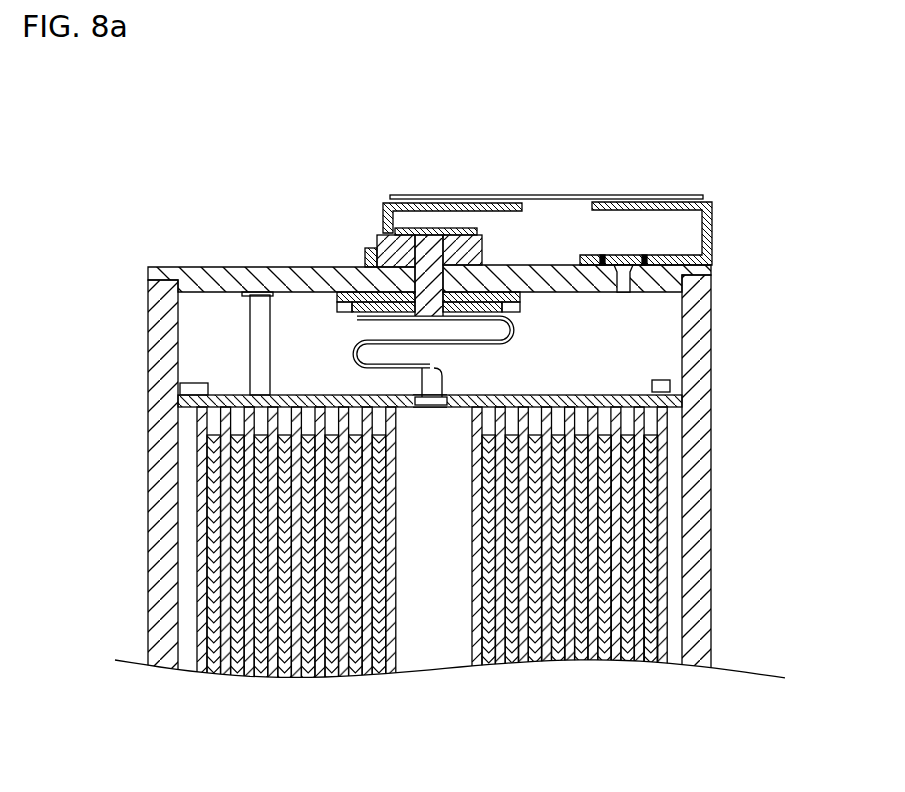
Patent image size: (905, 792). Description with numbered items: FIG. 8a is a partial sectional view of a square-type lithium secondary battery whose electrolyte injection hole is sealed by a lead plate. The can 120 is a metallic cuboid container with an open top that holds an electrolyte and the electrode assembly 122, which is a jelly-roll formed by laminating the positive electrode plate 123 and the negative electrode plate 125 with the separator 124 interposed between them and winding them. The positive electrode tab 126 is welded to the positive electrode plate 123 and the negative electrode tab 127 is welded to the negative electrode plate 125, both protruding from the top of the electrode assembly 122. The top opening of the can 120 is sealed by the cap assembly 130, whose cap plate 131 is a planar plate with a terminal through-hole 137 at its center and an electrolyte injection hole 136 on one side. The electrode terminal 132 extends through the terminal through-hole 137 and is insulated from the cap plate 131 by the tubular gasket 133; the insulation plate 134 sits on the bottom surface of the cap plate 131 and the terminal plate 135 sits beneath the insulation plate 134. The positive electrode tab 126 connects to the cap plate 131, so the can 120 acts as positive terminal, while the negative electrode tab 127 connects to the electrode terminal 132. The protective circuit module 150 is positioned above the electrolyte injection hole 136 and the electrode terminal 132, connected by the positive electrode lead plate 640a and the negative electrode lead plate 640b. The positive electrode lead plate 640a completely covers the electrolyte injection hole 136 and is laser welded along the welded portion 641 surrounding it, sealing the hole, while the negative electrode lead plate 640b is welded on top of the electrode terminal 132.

The can 120 is at (703, 555).
The electrode assembly 122 is at (508, 578).
The positive electrode plate 123 is at (648, 658).
The separator 124 is at (662, 658).
The negative electrode plate 125 is at (625, 660).
The positive electrode tab 126 is at (253, 338).
The negative electrode tab 127 is at (353, 355).
The cap assembly 130 is at (455, 261).
The cap plate 131 is at (222, 276).
The electrode terminal 132 is at (400, 250).
The tubular gasket 133 is at (484, 248).
The insulation plate 134 is at (337, 300).
The terminal plate 135 is at (510, 312).
The electrolyte injection hole 136 is at (627, 290).
The terminal through-hole 137 is at (373, 250).
The protective circuit module 150 is at (558, 197).
The positive electrode lead plate 640a is at (713, 233).
The negative electrode lead plate 640b is at (435, 205).
The welded portion 641 is at (640, 260).